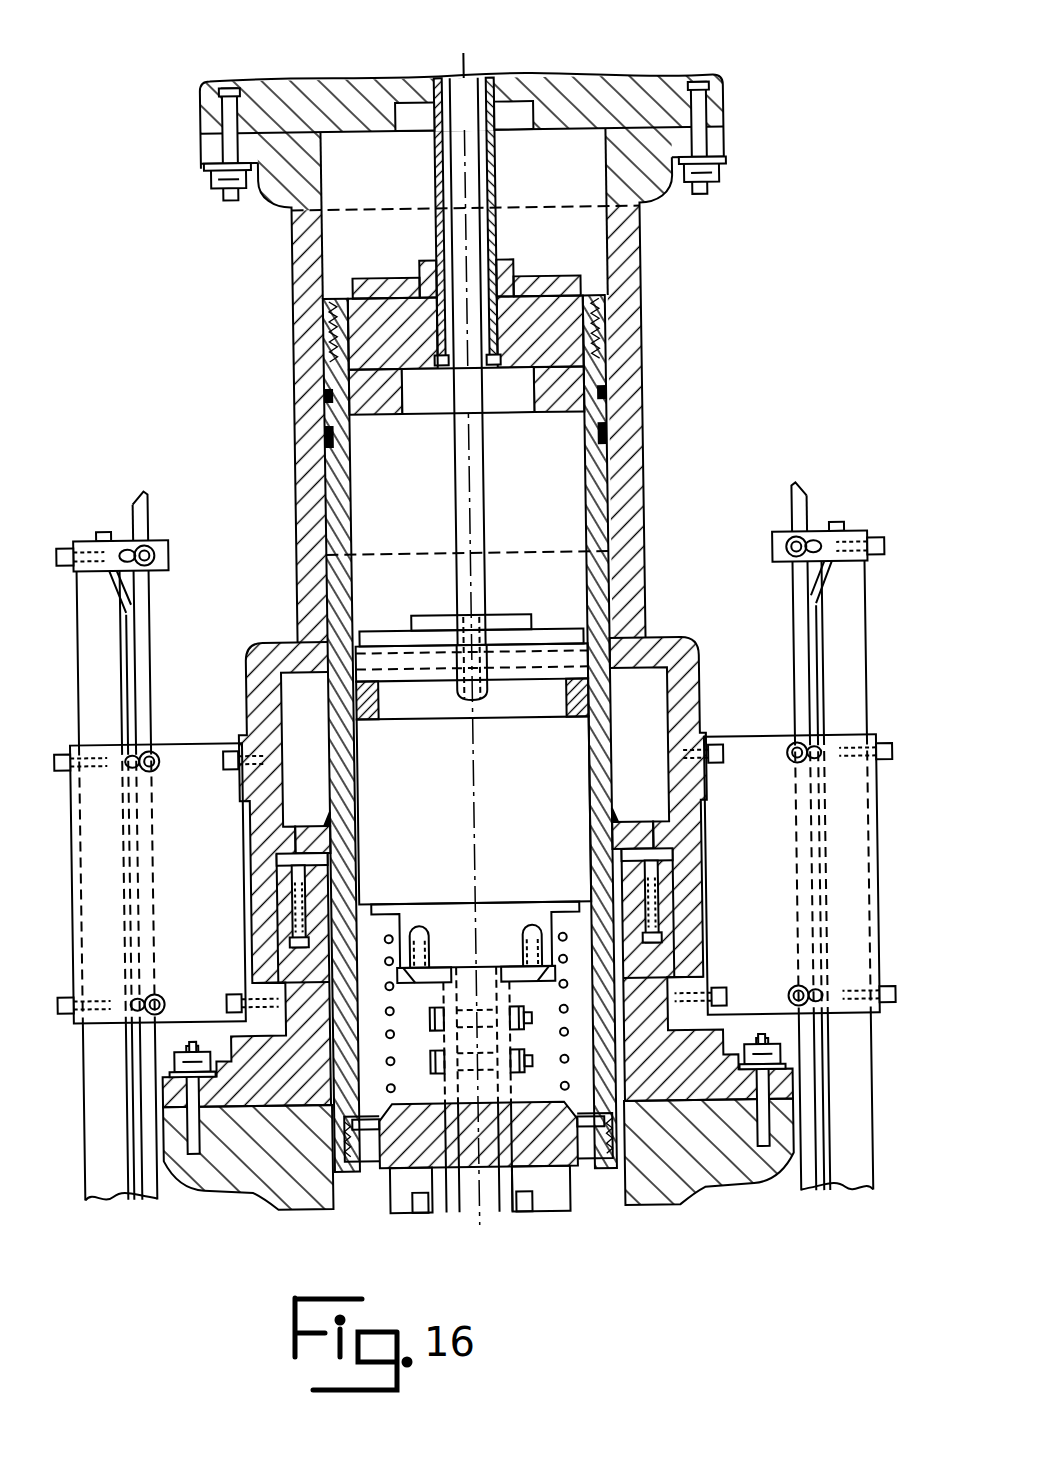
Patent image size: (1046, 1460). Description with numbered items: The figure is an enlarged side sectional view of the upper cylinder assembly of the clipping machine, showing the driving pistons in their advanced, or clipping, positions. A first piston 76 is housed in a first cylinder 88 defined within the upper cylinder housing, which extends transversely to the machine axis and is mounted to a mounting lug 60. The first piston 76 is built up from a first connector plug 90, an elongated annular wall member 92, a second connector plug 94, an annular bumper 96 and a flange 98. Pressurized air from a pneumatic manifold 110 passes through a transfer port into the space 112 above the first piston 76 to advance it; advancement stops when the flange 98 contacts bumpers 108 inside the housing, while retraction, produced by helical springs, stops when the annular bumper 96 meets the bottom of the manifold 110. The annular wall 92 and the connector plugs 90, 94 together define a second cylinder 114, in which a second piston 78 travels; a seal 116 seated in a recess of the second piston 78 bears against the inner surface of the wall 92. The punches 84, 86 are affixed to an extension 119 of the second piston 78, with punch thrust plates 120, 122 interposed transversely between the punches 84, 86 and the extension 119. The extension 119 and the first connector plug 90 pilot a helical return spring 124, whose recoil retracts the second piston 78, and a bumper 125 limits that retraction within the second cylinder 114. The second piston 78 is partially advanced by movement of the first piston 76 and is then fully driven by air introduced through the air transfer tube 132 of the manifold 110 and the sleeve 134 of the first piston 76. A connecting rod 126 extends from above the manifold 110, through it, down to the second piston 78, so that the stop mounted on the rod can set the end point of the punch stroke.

The mounting lug 60 is at (249, 1167).
The first piston 76 is at (602, 484).
The second piston 78 is at (387, 750).
The punch 84 is at (448, 1200).
The punch 86 is at (494, 1175).
The first cylinder 88 is at (611, 539).
The first connector plug 90 is at (369, 1162).
The annular wall member 92 is at (602, 462).
The second connector plug 94 is at (532, 299).
The annular bumper 96 is at (577, 279).
The flange 98 is at (637, 824).
The bumpers 108 is at (298, 870).
The pneumatic manifold 110 is at (604, 103).
The space above the piston 112 is at (337, 212).
The second cylinder 114 is at (350, 437).
The seal 116 is at (357, 688).
The extension of the piston 119 is at (539, 926).
The punch thrust plate 120 is at (392, 976).
The punch thrust plate 122 is at (545, 977).
The helical return spring 124 is at (337, 1125).
The bumper 125 is at (568, 640).
The connecting rod 126 is at (473, 70).
The air transfer tube 132 is at (487, 85).
The sleeve 134 is at (503, 173).